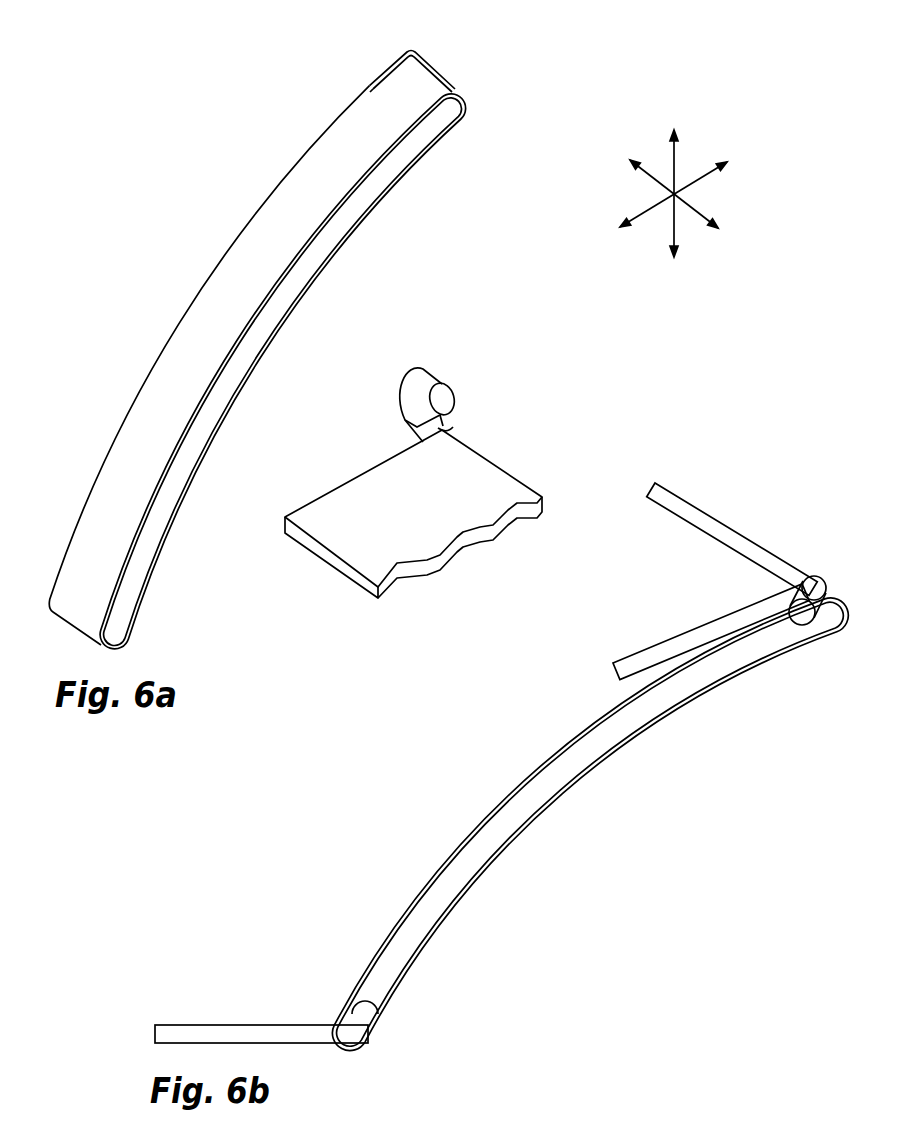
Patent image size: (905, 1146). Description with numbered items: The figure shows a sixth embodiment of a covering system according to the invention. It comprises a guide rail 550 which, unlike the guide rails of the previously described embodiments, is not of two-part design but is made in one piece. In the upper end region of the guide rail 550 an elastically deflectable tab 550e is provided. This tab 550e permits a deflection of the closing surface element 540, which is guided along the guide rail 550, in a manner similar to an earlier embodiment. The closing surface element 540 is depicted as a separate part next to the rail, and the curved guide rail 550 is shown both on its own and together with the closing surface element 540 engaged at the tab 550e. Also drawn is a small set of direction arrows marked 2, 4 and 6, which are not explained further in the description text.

In FIG. 6A, the guide rail 550 is at (160, 247).
In FIG. 6A, the elastically deflectable tab 550e is at (397, 73).
In FIG. 6B, the elastically deflectable tab 550e is at (808, 576).
In FIG. 6A, the closing surface element 540 is at (380, 604).
In FIG. 6A, the axis direction 2 is at (685, 198).
In FIG. 6A, the axis direction 4 is at (677, 157).
In FIG. 6A, the axis direction 6 is at (703, 170).